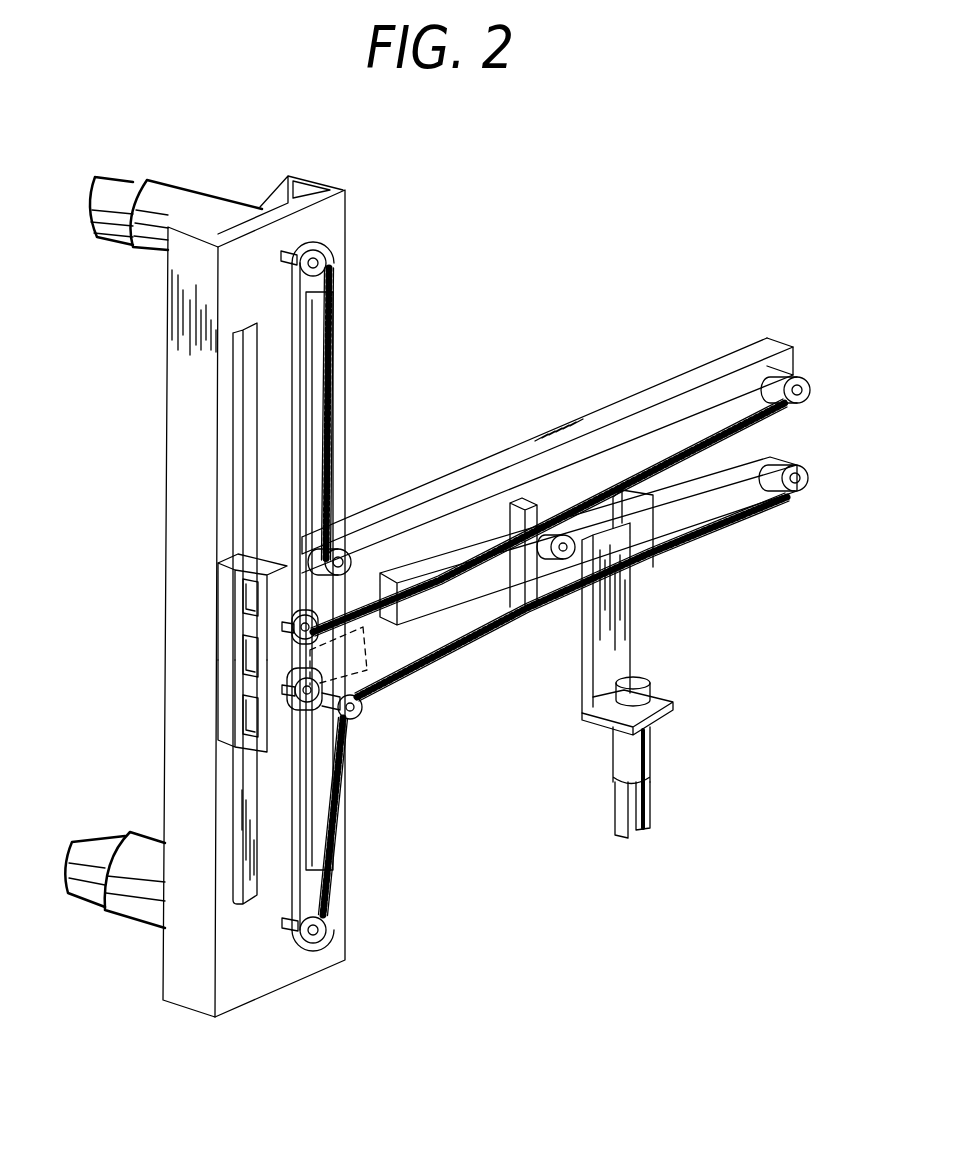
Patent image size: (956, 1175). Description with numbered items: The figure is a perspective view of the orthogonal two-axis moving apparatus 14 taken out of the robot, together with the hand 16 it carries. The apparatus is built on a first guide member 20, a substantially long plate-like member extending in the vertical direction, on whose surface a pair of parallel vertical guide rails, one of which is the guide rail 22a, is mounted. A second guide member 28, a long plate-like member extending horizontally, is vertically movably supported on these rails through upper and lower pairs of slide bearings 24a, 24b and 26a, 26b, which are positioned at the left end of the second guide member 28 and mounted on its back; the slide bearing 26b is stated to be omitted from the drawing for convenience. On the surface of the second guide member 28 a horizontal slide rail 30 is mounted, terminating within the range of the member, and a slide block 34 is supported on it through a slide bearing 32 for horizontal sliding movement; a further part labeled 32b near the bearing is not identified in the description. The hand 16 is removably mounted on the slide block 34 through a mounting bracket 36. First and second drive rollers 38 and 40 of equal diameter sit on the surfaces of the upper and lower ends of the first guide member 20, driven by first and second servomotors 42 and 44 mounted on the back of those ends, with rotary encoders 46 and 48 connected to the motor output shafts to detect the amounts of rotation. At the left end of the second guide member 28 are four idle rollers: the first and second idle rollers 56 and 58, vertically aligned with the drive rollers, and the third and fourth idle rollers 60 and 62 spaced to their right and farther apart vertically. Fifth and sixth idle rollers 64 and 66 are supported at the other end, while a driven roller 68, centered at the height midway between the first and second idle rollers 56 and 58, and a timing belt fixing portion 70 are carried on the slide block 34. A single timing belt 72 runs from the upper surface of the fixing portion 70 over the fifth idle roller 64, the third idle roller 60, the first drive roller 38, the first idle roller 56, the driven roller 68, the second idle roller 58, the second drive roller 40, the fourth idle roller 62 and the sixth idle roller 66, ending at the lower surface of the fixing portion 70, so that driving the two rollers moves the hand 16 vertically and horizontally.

The orthogonal two-axis moving apparatus 14 is at (566, 260).
The hand 16 is at (654, 755).
The first guide member 20 is at (349, 274).
The guide rail 22a is at (240, 428).
The slide bearing 24a is at (216, 590).
The slide bearing 24b is at (218, 680).
The slide bearing 26a is at (355, 512).
The slide bearing 26b is at (385, 672).
The second guide member 28 is at (581, 511).
The slide rail 30 is at (706, 432).
The slide bearing 32 is at (503, 607).
The vertical belt guide 32b is at (340, 398).
The slide block 34 is at (543, 597).
The mounting bracket 36 is at (615, 648).
The first drive roller 38 is at (325, 248).
The second drive roller 40 is at (325, 938).
The first servomotor 42 is at (193, 205).
The second servomotor 44 is at (130, 912).
The rotary encoder 46 is at (118, 190).
The rotary encoder 48 is at (88, 900).
The first idle roller 56 is at (234, 632).
The second idle roller 58 is at (230, 725).
The third idle roller 60 is at (350, 537).
The fourth idle roller 62 is at (362, 716).
The fifth idle roller 64 is at (806, 385).
The sixth idle roller 66 is at (815, 470).
The driven roller 68 is at (537, 588).
The timing belt fixing portion 70 is at (653, 548).
The timing belt 72 is at (705, 540).